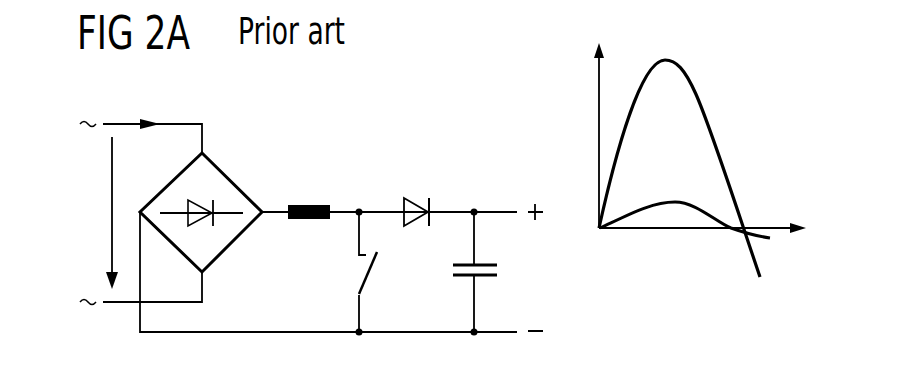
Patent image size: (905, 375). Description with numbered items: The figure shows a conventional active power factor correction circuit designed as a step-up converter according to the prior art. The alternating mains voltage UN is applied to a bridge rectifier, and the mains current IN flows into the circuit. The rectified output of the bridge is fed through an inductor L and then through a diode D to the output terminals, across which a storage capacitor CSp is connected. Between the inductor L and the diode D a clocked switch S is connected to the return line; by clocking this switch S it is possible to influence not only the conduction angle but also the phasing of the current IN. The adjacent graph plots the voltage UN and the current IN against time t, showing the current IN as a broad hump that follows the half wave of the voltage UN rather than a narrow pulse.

The current IN is at (680, 168).
The mains input voltage UN is at (735, 108).
The inductor L is at (308, 199).
The diode D is at (425, 196).
The clocked switch S is at (368, 271).
The storage capacitor CSp is at (500, 272).
The time axis t is at (796, 250).